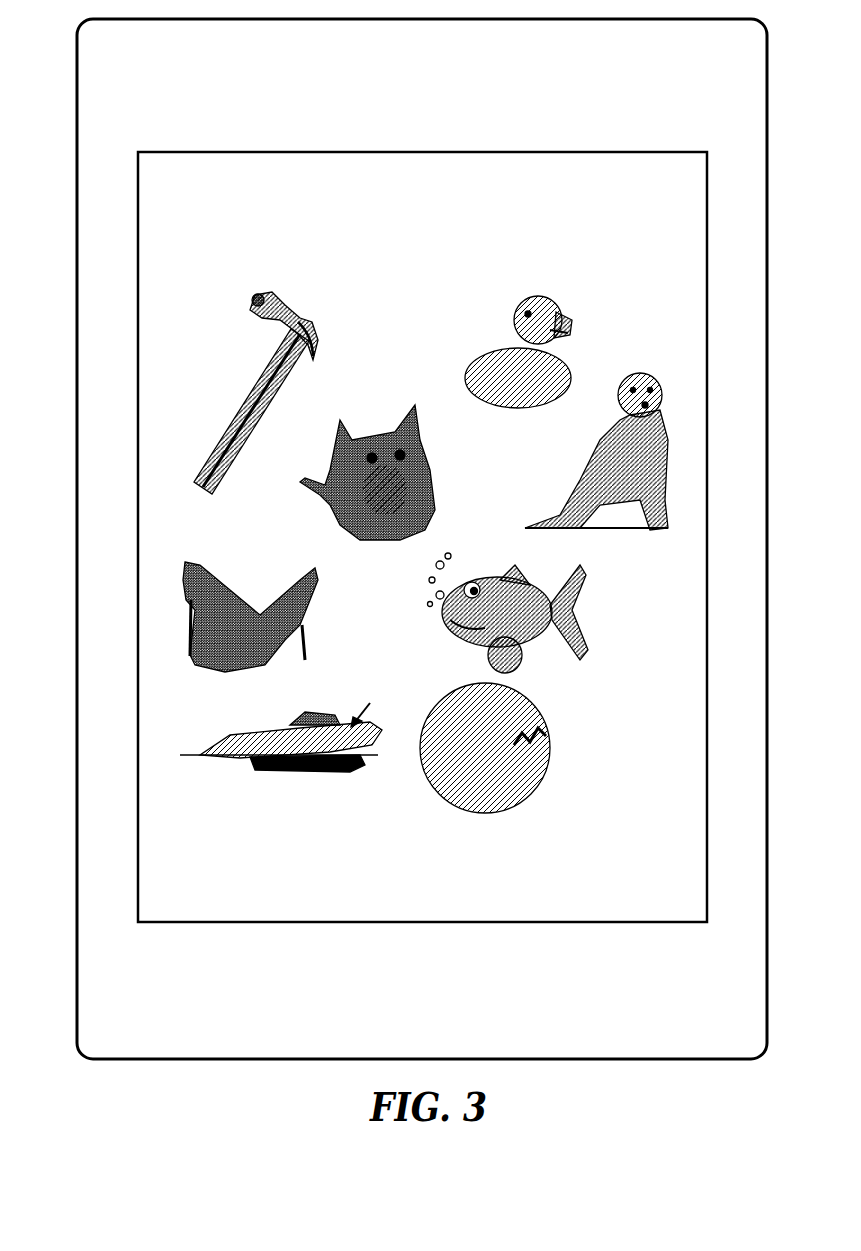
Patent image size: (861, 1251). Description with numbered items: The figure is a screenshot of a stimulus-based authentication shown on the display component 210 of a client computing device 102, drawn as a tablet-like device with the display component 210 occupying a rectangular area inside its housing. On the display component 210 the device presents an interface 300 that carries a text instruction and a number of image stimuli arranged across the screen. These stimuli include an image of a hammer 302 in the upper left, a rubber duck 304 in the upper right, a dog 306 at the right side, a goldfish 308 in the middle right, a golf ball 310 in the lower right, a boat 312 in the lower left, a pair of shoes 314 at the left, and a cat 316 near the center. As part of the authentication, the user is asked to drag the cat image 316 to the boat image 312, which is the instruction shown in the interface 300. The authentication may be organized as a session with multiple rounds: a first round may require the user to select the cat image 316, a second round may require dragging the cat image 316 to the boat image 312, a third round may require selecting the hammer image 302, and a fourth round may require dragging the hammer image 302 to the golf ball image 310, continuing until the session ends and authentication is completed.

The client computing device 102 is at (77, 171).
The display component 210 is at (216, 125).
The interface 300 is at (641, 245).
The hammer image 302 is at (304, 322).
The rubber duck image 304 is at (537, 300).
The dog image 306 is at (640, 522).
The goldfish image 308 is at (571, 612).
The golf ball image 310 is at (552, 738).
The boat image 312 is at (294, 768).
The shoes image 314 is at (318, 590).
The cat image 316 is at (420, 469).